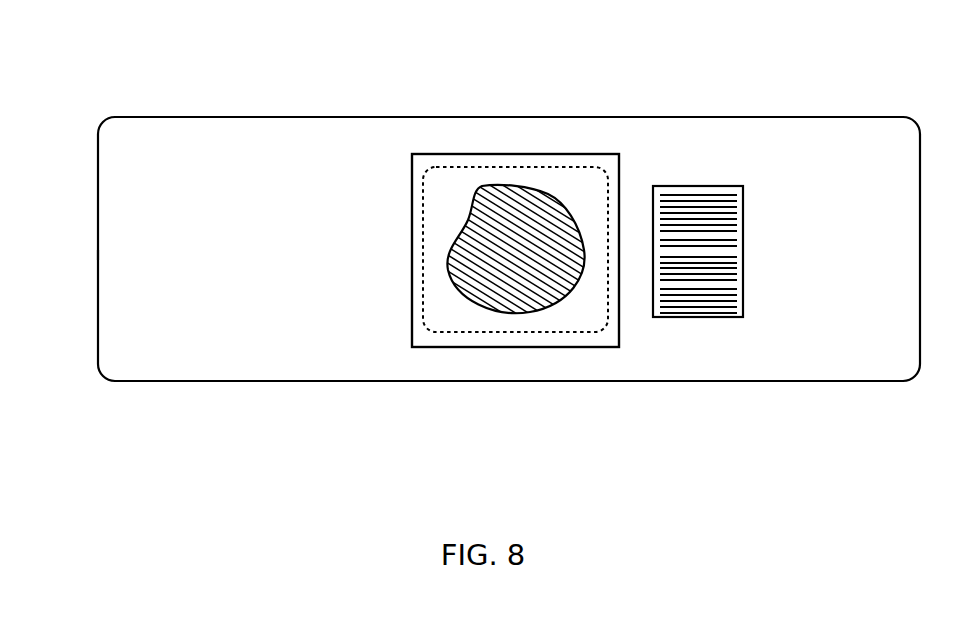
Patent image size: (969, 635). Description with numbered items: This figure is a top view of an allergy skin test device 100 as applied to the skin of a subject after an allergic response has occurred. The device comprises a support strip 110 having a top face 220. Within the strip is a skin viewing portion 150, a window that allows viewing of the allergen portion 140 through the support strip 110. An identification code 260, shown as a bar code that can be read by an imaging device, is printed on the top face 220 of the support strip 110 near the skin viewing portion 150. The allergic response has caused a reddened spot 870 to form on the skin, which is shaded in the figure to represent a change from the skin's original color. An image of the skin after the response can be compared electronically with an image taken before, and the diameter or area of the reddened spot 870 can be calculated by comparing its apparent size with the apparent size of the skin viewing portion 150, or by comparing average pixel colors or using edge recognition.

The allergy skin test device 100 is at (144, 76).
The support strip 110 is at (98, 253).
The top face 220 is at (214, 331).
The skin viewing portion 150 is at (467, 347).
The allergen portion 140 is at (533, 333).
The reddened spot 870 is at (527, 188).
The identification code 260 is at (703, 317).